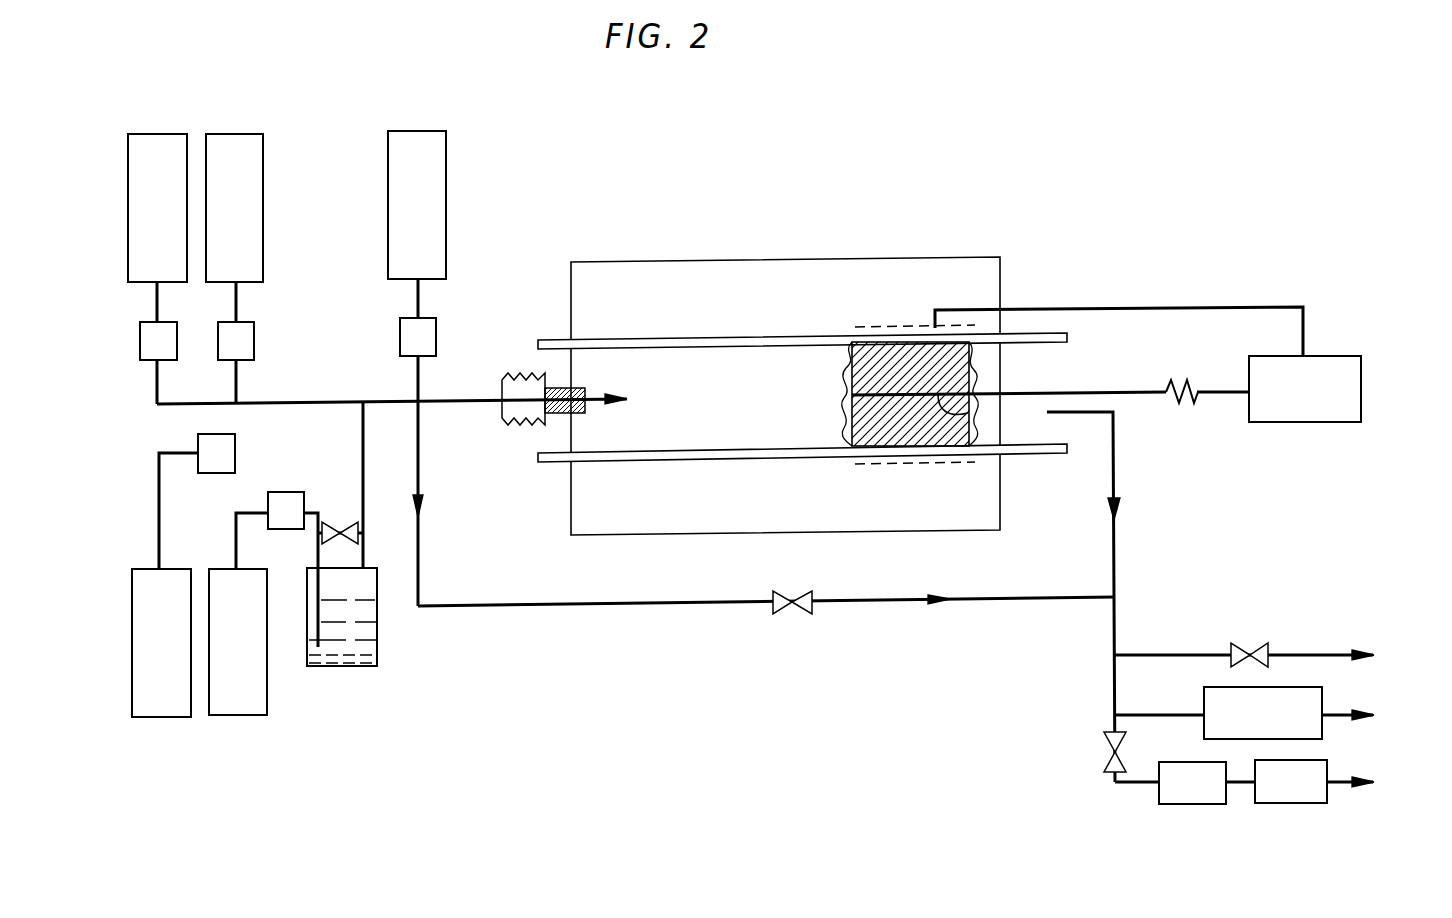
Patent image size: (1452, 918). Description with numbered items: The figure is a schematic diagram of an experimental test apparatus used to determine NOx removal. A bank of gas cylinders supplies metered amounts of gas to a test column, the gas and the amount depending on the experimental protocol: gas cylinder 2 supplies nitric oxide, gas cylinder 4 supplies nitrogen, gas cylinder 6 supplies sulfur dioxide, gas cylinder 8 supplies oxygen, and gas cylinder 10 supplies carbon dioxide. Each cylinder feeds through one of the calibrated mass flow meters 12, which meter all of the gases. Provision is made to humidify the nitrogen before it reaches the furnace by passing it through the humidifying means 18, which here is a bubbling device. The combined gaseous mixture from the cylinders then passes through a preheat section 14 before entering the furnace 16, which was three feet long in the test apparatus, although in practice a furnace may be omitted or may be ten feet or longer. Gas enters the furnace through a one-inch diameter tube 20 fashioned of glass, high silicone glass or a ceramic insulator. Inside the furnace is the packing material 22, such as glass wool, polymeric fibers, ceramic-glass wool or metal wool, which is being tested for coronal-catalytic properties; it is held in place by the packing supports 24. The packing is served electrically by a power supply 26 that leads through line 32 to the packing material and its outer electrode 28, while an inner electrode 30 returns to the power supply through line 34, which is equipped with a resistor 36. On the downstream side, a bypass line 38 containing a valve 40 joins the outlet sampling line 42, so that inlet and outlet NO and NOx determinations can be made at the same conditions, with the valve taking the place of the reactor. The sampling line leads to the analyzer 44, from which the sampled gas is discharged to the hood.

The gas cylinder 2 is at (166, 717).
The gas cylinder 4 is at (245, 715).
The gas cylinder 6 is at (136, 134).
The gas cylinder 8 is at (242, 134).
The gas cylinder 10 is at (426, 131).
The mass flow meters 12 is at (400, 340).
The preheat section 14 is at (509, 414).
The furnace 16 is at (638, 262).
The humidifying means 18 is at (355, 668).
The tube 20 is at (588, 413).
The packing material 22 is at (842, 356).
The packing supports 24 is at (840, 410).
The power supply 26 is at (1335, 356).
The outer electrode 28 is at (880, 326).
The inner electrode 30 is at (968, 413).
The line 32 is at (1182, 307).
The line 34 is at (1098, 392).
The resistor 36 is at (1184, 380).
The bypass line 38 is at (660, 603).
The valve 40 is at (792, 612).
The outlet sampling line 42 is at (1115, 450).
The NO/NOx analyzer 44 is at (1322, 698).